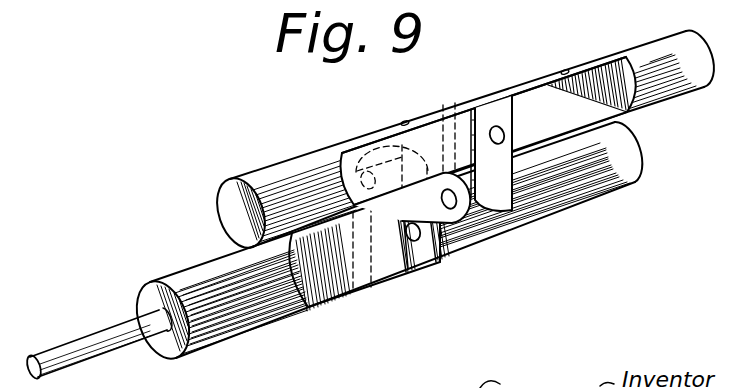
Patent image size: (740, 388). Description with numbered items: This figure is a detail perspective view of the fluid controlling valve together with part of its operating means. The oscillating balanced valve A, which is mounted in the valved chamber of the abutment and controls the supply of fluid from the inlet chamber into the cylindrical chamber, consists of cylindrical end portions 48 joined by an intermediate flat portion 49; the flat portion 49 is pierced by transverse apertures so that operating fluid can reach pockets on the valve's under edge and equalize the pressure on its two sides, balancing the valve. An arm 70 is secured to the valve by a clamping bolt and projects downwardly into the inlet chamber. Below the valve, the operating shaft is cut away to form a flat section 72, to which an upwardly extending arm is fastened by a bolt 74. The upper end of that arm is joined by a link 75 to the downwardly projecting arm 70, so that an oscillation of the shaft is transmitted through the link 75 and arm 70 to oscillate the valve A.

The cylindrical end portions 48 is at (282, 165).
The intermediate flat portion 49 is at (523, 104).
The oscillating balanced valve A is at (412, 122).
The arm 70 is at (491, 153).
The flat section 72 is at (376, 257).
The bolt 74 is at (415, 242).
The link 75 is at (458, 213).